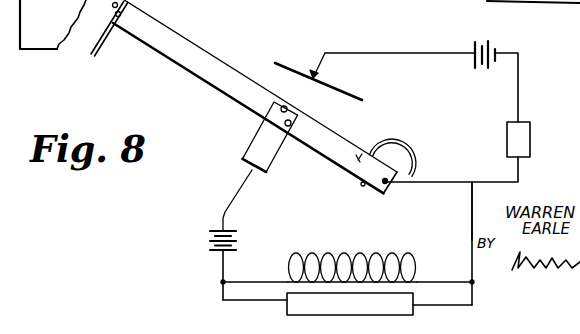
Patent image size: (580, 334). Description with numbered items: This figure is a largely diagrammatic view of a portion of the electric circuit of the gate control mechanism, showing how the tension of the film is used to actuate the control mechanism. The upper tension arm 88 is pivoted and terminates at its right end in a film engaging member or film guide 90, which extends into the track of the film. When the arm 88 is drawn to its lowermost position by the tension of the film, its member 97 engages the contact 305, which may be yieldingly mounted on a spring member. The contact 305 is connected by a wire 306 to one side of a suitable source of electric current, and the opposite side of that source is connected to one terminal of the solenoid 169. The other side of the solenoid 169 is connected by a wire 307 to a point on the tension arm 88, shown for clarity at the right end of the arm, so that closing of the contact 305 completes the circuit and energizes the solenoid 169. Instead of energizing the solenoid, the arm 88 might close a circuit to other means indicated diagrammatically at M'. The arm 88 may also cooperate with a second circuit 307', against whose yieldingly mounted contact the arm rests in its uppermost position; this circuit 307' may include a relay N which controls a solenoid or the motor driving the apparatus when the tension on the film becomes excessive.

The tension arm 88 is at (199, 52).
The member 97 is at (270, 140).
The contact 305 is at (247, 172).
The wire 306 is at (231, 205).
The solenoid 169 is at (343, 253).
The film guide 90 is at (398, 143).
The circuit 307' is at (458, 41).
The wire 307 is at (444, 211).
The relay N is at (530, 137).
The other means M' is at (350, 304).